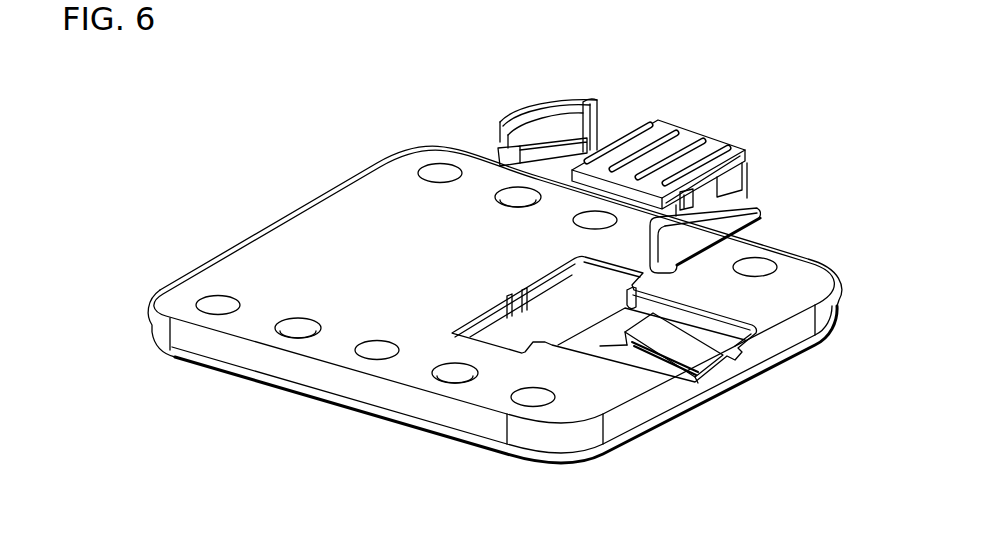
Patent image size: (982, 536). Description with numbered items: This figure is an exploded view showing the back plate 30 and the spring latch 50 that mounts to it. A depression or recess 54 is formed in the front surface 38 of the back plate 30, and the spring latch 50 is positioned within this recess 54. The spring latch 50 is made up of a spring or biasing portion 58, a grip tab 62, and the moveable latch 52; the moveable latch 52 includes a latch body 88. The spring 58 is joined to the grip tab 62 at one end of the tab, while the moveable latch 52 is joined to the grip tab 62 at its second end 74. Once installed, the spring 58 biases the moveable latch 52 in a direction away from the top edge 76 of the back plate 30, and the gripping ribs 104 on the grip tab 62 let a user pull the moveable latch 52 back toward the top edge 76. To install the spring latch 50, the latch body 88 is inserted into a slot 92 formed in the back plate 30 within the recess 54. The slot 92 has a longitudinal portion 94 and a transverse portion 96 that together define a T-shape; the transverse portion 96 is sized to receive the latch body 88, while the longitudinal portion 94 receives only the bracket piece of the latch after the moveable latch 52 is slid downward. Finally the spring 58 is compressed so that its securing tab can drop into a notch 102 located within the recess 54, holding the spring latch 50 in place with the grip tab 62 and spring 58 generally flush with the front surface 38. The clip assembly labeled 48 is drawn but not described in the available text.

The back plate 30 is at (495, 264).
The front surface 38 is at (400, 232).
The top edge 76 is at (202, 268).
The recess 54 is at (604, 314).
The notch 102 is at (527, 298).
The transverse portion 96 is at (612, 338).
The slot 92 is at (627, 345).
The longitudinal portion 94 is at (678, 365).
The spring 58 is at (555, 100).
The clip 48 is at (692, 142).
The spring latch 50 is at (692, 142).
The grip tab 62 is at (692, 130).
The gripping ribs 104 is at (693, 142).
The second end 74 is at (733, 162).
The moveable latch 52 is at (740, 195).
The latch body 88 is at (690, 223).